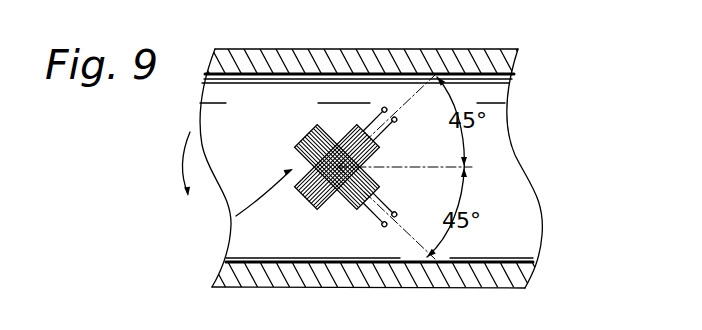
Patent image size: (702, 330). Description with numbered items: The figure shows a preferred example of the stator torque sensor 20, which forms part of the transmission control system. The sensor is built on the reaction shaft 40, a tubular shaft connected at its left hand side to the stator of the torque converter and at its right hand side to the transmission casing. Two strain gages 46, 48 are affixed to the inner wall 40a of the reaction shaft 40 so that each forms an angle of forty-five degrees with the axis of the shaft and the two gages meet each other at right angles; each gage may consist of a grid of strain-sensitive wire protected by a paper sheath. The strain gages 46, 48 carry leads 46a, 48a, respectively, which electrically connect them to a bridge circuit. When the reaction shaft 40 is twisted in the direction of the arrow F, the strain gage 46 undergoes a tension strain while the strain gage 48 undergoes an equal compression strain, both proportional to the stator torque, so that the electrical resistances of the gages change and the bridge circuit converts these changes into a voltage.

The stator torque sensor 20 is at (232, 215).
The reaction shaft 40 is at (458, 53).
The inner wall 40a is at (525, 200).
The strain gage 46 is at (308, 138).
The leads 46a is at (379, 208).
The strain gage 48 is at (304, 204).
The leads 48a is at (394, 122).
The arrow indicating twisting direction F is at (183, 179).